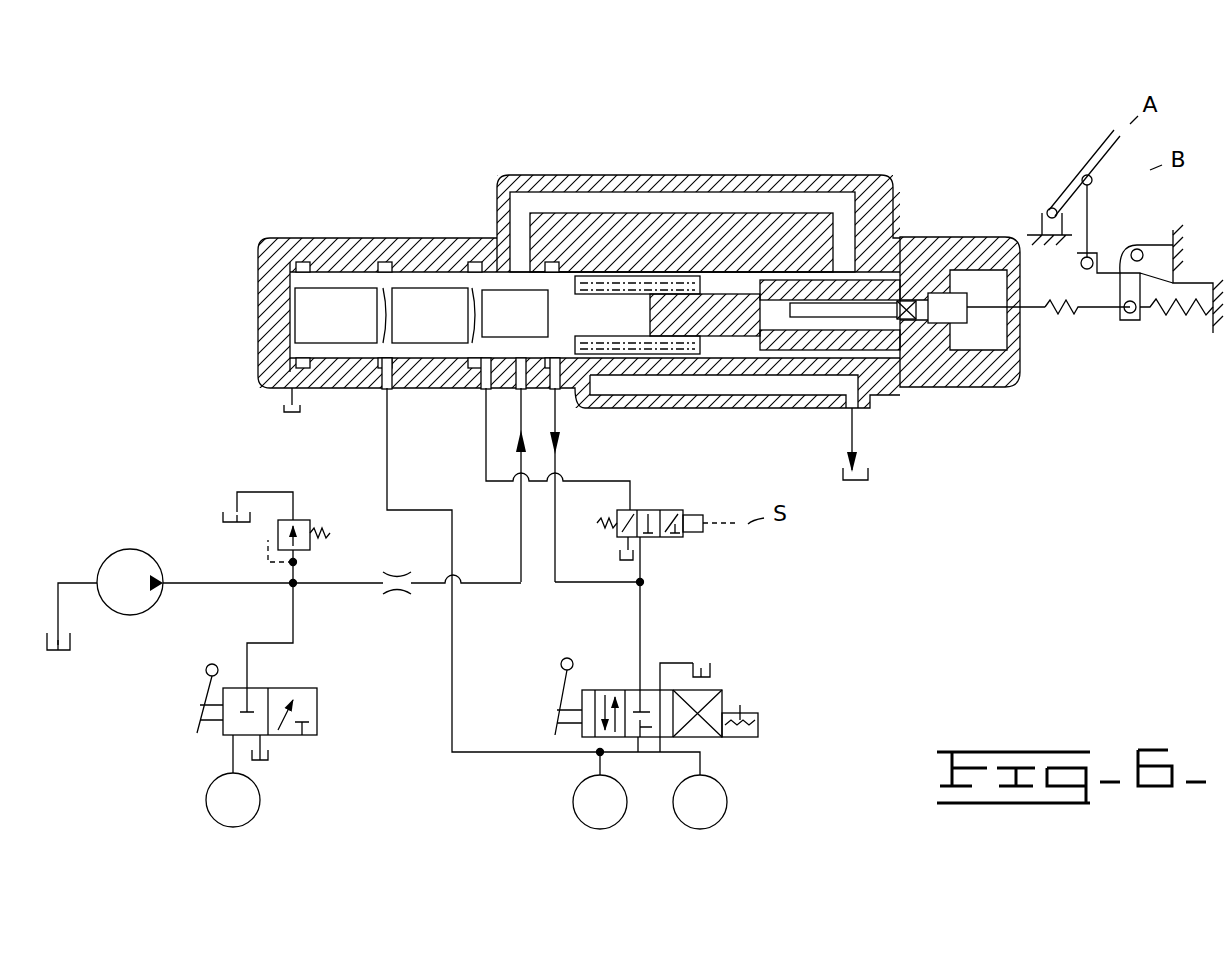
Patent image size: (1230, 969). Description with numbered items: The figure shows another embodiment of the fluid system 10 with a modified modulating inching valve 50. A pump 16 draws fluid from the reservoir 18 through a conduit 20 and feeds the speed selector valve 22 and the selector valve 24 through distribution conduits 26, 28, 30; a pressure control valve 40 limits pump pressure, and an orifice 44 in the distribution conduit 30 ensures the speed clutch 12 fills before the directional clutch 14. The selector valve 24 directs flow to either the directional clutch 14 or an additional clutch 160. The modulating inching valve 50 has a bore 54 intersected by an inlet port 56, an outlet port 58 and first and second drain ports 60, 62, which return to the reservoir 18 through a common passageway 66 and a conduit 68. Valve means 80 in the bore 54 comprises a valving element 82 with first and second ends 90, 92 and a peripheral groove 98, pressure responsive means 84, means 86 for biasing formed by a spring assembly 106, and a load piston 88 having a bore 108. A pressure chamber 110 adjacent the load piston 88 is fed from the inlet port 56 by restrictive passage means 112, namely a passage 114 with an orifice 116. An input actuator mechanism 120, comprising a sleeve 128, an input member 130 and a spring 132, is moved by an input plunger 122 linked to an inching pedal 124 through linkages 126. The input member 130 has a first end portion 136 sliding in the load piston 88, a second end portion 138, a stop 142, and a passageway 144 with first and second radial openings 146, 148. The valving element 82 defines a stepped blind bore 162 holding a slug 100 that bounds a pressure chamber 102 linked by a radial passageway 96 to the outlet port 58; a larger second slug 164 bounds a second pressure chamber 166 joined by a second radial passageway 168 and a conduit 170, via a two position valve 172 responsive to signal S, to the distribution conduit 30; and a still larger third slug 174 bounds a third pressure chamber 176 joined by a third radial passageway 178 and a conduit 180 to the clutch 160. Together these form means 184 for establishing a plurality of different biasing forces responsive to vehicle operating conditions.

The fluid system 10 is at (220, 135).
The speed clutch 12 is at (262, 805).
The directional clutch 14 is at (730, 803).
The pump 16 is at (130, 582).
The reservoir 18 is at (75, 645).
The conduit 20 is at (78, 583).
The speed selector valve 22 is at (317, 735).
The directional selector valve 24 is at (725, 700).
The distribution conduit 26 is at (185, 583).
The distribution conduit 28 is at (300, 643).
The distribution conduit 30 is at (330, 582).
The pressure control valve 40 is at (312, 522).
The orifice 44 is at (390, 590).
The modulating inching valve 50 is at (480, 150).
The bore 54 is at (757, 270).
The inlet port 56 is at (521, 392).
The outlet port 58 is at (563, 400).
The first drain port 60 is at (613, 393).
The second drain port 62 is at (895, 398).
The common passageway 66 is at (712, 392).
The conduit 68 is at (850, 430).
The valve means 80 is at (570, 160).
The valving element 82 is at (585, 258).
The pressure responsive means 84 is at (335, 182).
The means for biasing the valving element 86 is at (637, 250).
The load piston 88 is at (693, 258).
The first end 90 is at (260, 270).
The second end 92 is at (625, 362).
The radial passageway 96 is at (600, 380).
The peripheral groove 98 is at (505, 247).
The slug 100 is at (515, 313).
The pressure chamber 102 is at (498, 365).
The spring assembly 106 is at (655, 284).
The bore 108 is at (758, 378).
The pressure chamber 110 is at (775, 268).
The restrictive passage means 112 is at (778, 160).
The passage 114 is at (577, 197).
The orifice 116 is at (778, 230).
The input actuator mechanism 120 is at (985, 325).
The input plunger 122 is at (1005, 290).
The inching pedal 124 is at (1085, 150).
The linkages 126 is at (1100, 232).
The sleeve 128 is at (905, 272).
The input member 130 is at (965, 393).
The spring 132 is at (910, 290).
The first end portion 136 is at (640, 318).
The second end portion 138 is at (1010, 385).
The stop 142 is at (790, 287).
The passageway 144 is at (782, 338).
The first radial opening 146 is at (940, 280).
The second radial opening 148 is at (748, 340).
The clutch 160 is at (573, 805).
The stepped blind bore 162 is at (385, 275).
The second slug 164 is at (430, 315).
The second pressure chamber 166 is at (476, 262).
The second radial passageway 168 is at (452, 372).
The conduit 170 is at (485, 455).
The two position valve 172 is at (662, 513).
The third slug 174 is at (336, 315).
The third pressure chamber 176 is at (318, 262).
The third radial passageway 178 is at (380, 372).
The conduit 180 is at (385, 460).
The means for establishing a plurality of different biasing forces 184 is at (425, 263).